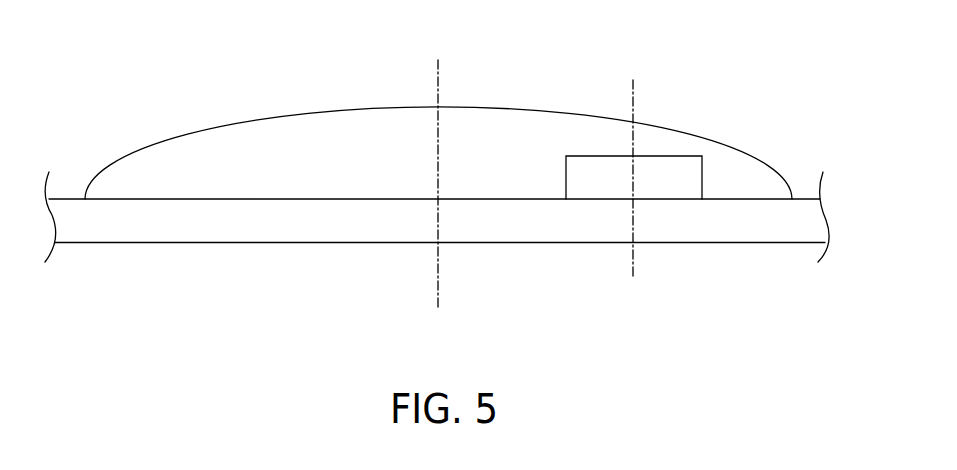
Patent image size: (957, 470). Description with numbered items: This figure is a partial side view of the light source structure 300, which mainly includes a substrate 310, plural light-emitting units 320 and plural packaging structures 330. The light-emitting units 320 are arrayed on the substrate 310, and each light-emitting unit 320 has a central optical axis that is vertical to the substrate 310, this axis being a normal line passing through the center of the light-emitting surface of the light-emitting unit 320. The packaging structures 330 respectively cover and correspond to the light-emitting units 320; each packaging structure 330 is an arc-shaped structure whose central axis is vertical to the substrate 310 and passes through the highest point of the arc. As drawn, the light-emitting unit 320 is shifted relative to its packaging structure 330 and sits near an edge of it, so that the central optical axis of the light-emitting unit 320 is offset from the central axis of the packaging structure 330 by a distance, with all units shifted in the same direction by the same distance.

The light source structure 300 is at (70, 50).
The substrate 310 is at (757, 222).
The light-emitting unit 320 is at (684, 175).
The packaging structure 330 is at (222, 141).